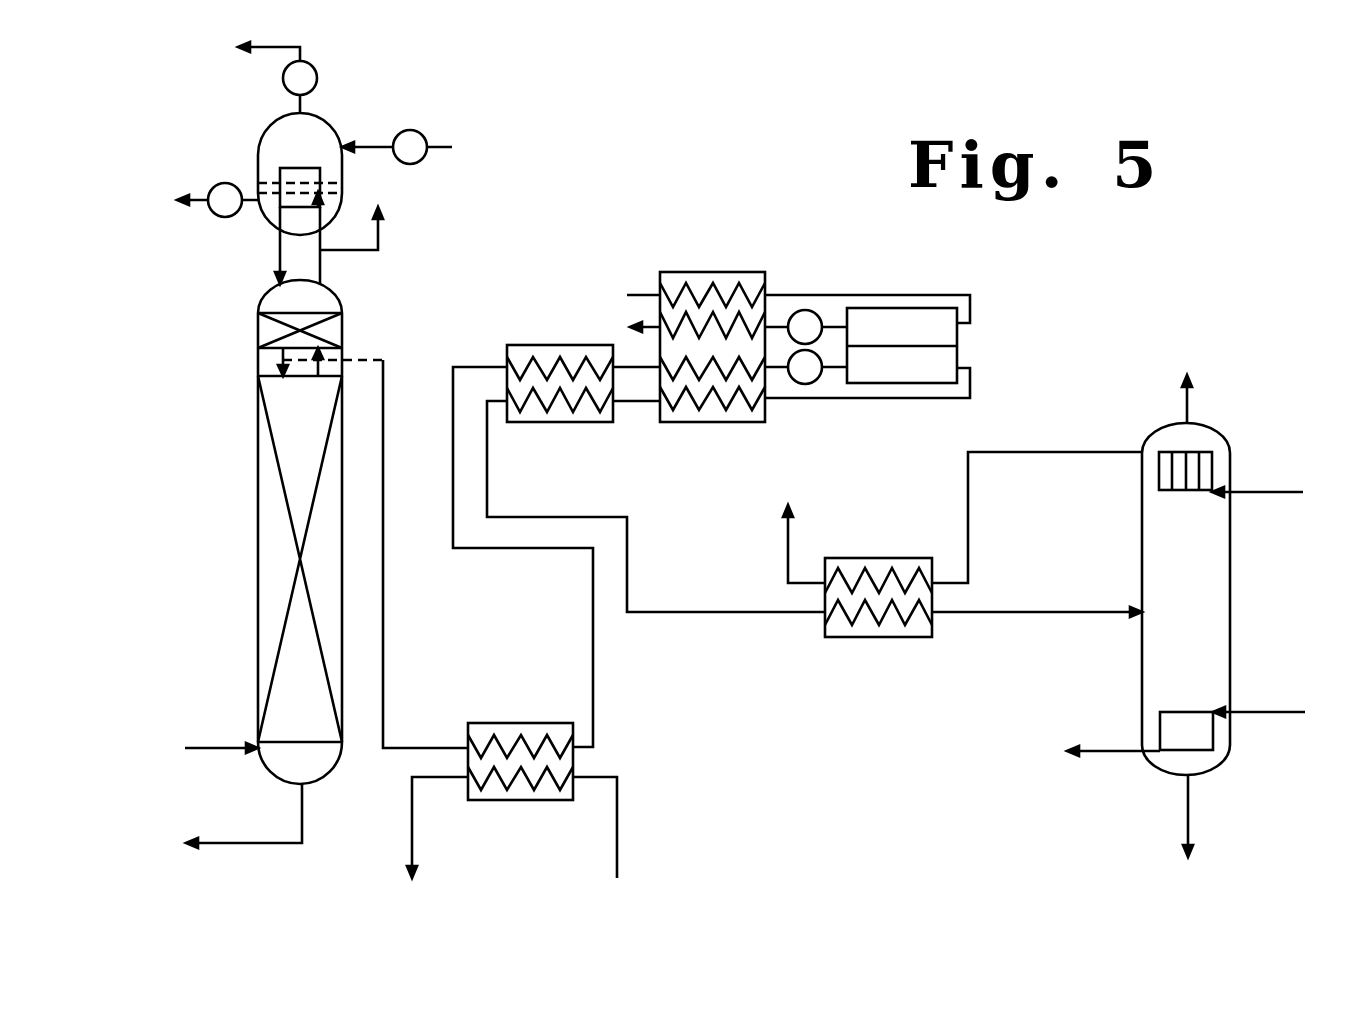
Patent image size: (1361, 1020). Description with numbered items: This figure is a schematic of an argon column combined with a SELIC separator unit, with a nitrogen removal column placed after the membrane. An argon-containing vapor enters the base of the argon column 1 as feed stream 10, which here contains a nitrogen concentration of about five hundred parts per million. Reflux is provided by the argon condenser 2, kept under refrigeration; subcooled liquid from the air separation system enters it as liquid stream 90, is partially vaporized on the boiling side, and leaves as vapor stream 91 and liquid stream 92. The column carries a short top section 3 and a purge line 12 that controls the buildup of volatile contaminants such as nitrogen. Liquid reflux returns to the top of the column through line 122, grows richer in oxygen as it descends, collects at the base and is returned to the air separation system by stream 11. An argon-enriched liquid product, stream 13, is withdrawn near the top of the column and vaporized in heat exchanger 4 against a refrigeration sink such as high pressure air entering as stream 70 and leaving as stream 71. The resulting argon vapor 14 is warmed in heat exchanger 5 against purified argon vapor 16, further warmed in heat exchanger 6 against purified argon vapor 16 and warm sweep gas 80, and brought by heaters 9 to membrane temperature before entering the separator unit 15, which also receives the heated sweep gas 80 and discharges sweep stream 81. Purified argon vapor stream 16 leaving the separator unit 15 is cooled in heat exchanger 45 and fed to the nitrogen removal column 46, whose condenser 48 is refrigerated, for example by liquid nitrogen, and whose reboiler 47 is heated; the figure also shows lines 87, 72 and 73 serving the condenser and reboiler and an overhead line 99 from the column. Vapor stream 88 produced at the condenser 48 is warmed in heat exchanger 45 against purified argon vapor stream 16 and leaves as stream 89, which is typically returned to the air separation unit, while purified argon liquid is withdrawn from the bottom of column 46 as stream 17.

The argon column 1 is at (320, 532).
The argon condenser 2 is at (300, 174).
The short top section 3 is at (253, 313).
The heat exchanger 4 is at (498, 723).
The heat exchanger 5 is at (545, 423).
The heat exchanger 6 is at (732, 422).
The heaters 9 is at (823, 312).
The feed stream 10 is at (200, 745).
The stream 11 is at (275, 845).
The purge line 12 is at (370, 252).
The stream 13 is at (387, 377).
The argon vapor 14 is at (483, 365).
The separator unit 15 is at (902, 345).
The purified argon vapor stream 16 is at (547, 515).
The stream 17 is at (1190, 805).
The heat exchanger 45 is at (865, 637).
The nitrogen removal column 46 is at (1186, 599).
The reboiler 47 is at (1160, 735).
The condenser 48 is at (1213, 463).
The stream 70 is at (617, 845).
The stream 71 is at (410, 843).
The inlet line 72 is at (1278, 715).
The outlet line 73 is at (1110, 755).
The sweep gas 80 is at (643, 293).
The stream 81 is at (652, 325).
The wash liquid inlet line 87 is at (1278, 488).
The vapor stream 88 is at (973, 523).
The stream 89 is at (790, 530).
The liquid stream 90 is at (443, 143).
The vapor stream 91 is at (275, 47).
The liquid stream 92 is at (200, 193).
The overhead outlet line 99 is at (1193, 407).
The line 122 is at (280, 247).